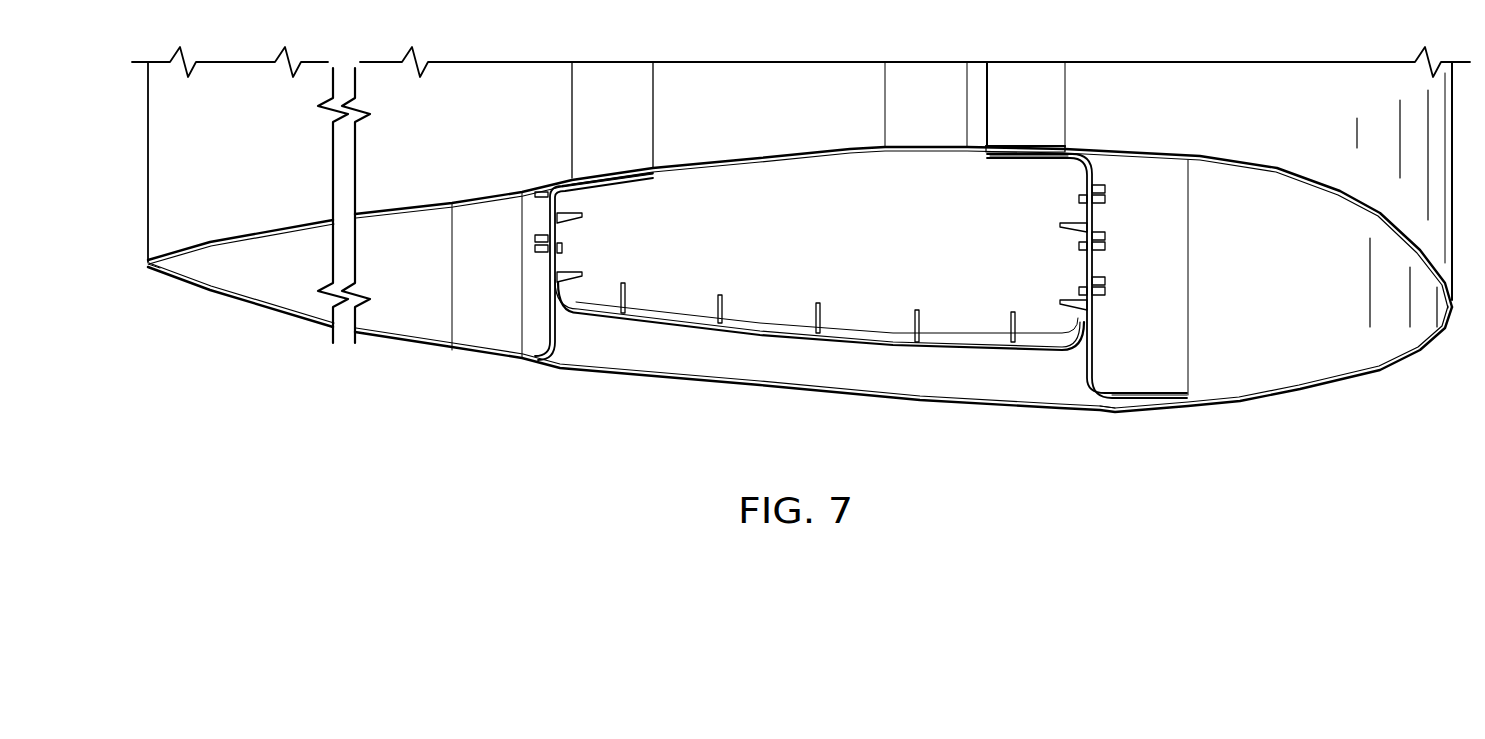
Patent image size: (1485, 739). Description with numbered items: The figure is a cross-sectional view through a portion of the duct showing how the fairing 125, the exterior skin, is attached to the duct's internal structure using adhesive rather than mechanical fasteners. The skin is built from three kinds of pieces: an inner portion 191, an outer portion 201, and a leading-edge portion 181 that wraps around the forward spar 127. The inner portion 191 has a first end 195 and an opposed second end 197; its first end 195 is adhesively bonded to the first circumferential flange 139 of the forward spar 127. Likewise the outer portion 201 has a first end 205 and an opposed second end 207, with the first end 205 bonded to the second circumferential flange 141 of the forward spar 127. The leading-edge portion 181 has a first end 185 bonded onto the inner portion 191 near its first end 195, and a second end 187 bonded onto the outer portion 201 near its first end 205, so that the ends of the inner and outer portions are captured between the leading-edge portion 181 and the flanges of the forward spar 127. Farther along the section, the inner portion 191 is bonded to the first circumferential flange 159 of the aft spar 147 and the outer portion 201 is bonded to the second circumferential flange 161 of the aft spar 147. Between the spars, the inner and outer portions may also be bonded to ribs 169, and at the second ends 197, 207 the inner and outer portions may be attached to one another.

The fairing 125 is at (1363, 377).
The forward spar 127 is at (1087, 388).
The first circumferential flange 139 is at (1028, 160).
The second circumferential flange 141 is at (1172, 392).
The aft spar 147 is at (556, 357).
The first circumferential flange 159 is at (624, 183).
The second circumferential flange 161 is at (470, 348).
The ribs 169 is at (780, 340).
The leading-edge portion 181 is at (1277, 168).
The first end 185 is at (1000, 143).
The second end 187 is at (1122, 410).
The inner portion 191 is at (267, 227).
The first end 195 is at (1073, 150).
The second end 197 is at (155, 251).
The outer portion 201 is at (280, 313).
The first end 205 is at (1190, 400).
The second end 207 is at (158, 272).